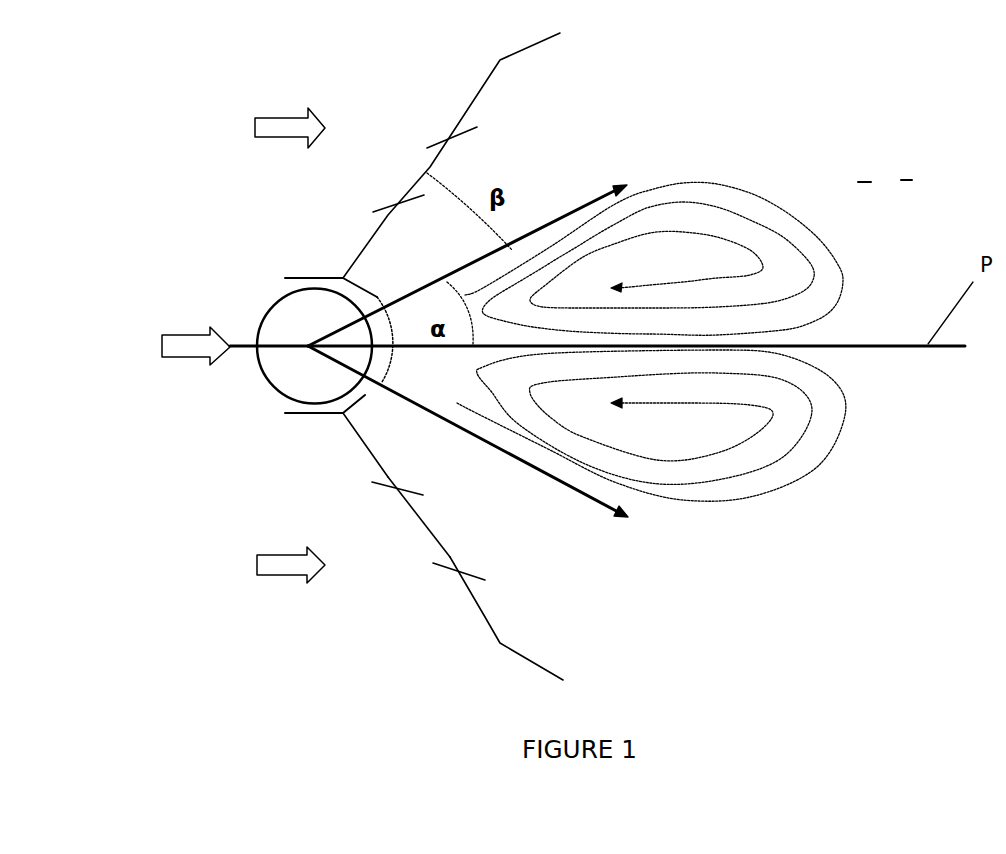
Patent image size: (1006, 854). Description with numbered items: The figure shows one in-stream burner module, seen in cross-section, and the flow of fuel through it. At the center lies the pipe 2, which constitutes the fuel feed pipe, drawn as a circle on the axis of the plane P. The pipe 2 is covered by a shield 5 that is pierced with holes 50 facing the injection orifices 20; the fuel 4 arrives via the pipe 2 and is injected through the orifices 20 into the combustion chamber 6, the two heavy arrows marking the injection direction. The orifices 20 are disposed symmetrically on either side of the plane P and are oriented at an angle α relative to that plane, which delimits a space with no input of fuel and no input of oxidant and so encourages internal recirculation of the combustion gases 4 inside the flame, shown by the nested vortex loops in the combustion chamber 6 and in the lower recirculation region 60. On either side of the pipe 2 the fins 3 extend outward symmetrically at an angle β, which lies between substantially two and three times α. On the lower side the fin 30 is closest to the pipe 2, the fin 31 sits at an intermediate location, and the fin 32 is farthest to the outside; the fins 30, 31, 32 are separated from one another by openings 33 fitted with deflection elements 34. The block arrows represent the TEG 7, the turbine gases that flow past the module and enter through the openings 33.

The pipe 2 is at (268, 383).
The fins 3 is at (493, 83).
The fuel 4 is at (540, 227).
The shield 5 is at (312, 274).
The combustion chamber 6 is at (684, 335).
The TEG 7 is at (282, 132).
The injection orifices 20 is at (366, 386).
The fin 30 is at (347, 445).
The fin 31 is at (430, 537).
The fin 32 is at (482, 615).
The openings 33 is at (393, 487).
The deflection elements 34 is at (448, 572).
The holes 50 is at (372, 302).
The vortex 60 is at (687, 418).